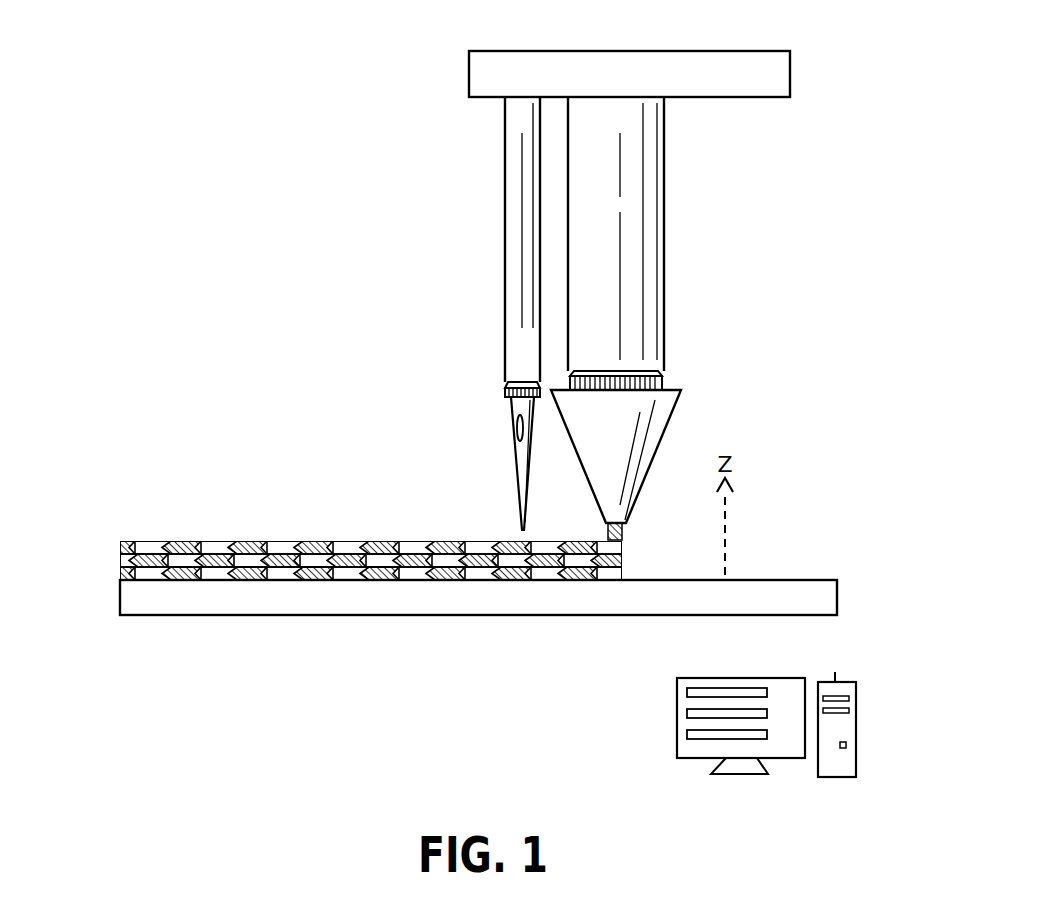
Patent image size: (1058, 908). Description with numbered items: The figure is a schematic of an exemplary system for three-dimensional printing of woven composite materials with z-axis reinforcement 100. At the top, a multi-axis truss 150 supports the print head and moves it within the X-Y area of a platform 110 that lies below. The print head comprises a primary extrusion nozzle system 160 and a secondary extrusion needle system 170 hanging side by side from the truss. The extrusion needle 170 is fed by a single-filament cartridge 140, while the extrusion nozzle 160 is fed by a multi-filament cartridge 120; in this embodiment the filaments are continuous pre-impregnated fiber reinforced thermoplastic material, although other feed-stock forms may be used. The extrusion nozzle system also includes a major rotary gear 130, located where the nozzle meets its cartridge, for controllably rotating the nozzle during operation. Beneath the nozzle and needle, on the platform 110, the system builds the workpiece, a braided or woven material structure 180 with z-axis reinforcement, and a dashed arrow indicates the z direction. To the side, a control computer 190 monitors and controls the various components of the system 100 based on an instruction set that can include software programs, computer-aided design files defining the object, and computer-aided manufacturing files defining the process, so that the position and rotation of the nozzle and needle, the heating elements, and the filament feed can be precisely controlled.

The system for 3D printing of woven composite materials with z-axis reinforcement 100 is at (262, 138).
The platform 110 is at (840, 587).
The multi-filament cartridge 120 is at (665, 240).
The major rotary gear 130 is at (663, 385).
The single-filament cartridge 140 is at (505, 292).
The multi-axis truss 150 is at (469, 70).
The primary extrusion nozzle system 160 is at (665, 440).
The secondary extrusion needle system 170 is at (512, 460).
The braided/woven material structure 180 is at (121, 560).
The control computer 190 is at (857, 726).